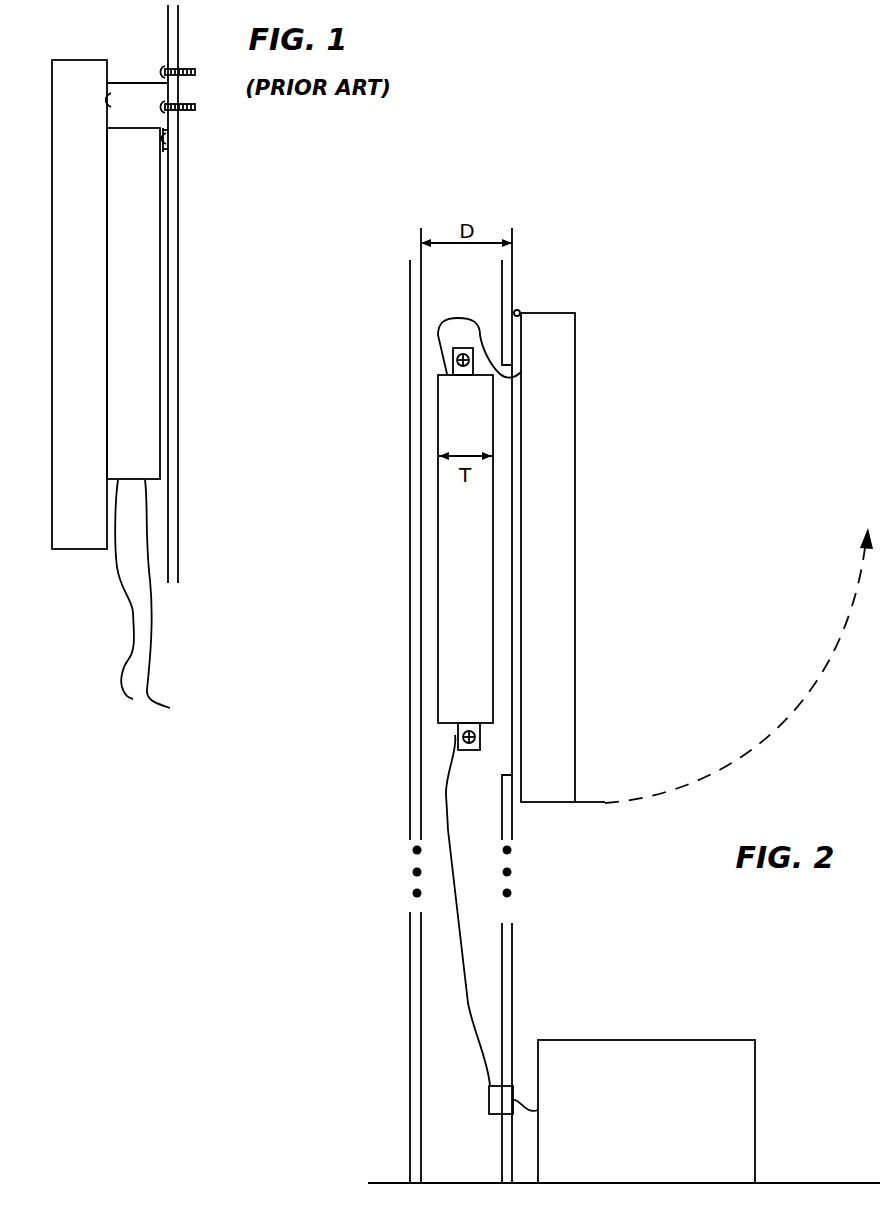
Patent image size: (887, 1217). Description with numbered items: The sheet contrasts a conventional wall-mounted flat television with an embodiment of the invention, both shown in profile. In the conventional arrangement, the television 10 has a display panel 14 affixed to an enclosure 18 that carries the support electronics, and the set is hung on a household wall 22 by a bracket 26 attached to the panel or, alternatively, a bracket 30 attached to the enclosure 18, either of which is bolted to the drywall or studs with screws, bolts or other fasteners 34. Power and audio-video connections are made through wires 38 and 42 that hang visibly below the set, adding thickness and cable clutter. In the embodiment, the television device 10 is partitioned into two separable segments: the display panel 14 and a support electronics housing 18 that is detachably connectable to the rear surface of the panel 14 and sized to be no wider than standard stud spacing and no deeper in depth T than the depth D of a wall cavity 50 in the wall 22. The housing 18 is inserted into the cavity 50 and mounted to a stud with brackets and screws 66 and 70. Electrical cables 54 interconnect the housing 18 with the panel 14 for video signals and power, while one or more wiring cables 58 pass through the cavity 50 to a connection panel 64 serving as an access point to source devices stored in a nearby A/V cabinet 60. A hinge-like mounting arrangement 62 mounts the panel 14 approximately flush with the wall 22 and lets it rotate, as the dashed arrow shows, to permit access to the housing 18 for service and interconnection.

In FIG. 1, the television device 10 is at (77, 594).
In FIG. 1, the display panel 14 is at (62, 314).
In FIG. 2, the display panel 14 is at (562, 500).
In FIG. 1, the support electronics housing 18 is at (125, 216).
In FIG. 2, the support electronics housing 18 is at (458, 641).
In FIG. 1, the wall 22 is at (182, 527).
In FIG. 2, the wall 22 is at (513, 282).
In FIG. 1, the bracket 26 is at (120, 83).
In FIG. 1, the bracket 30 is at (158, 122).
In FIG. 1, the fasteners 34 is at (184, 76).
In FIG. 1, the wires 38 is at (152, 645).
In FIG. 1, the wires 42 is at (118, 672).
In FIG. 2, the wall cavity 50 is at (440, 1107).
In FIG. 2, the electrical cables 54 is at (458, 316).
In FIG. 2, the wiring cables 58 is at (468, 1003).
In FIG. 2, the A/V cabinet 60 is at (692, 1040).
In FIG. 2, the hinge-like mounting arrangement 62 is at (519, 311).
In FIG. 2, the connection panel 64 is at (516, 1087).
In FIG. 2, the brackets and screws 66 is at (452, 350).
In FIG. 2, the brackets and screws 70 is at (468, 752).